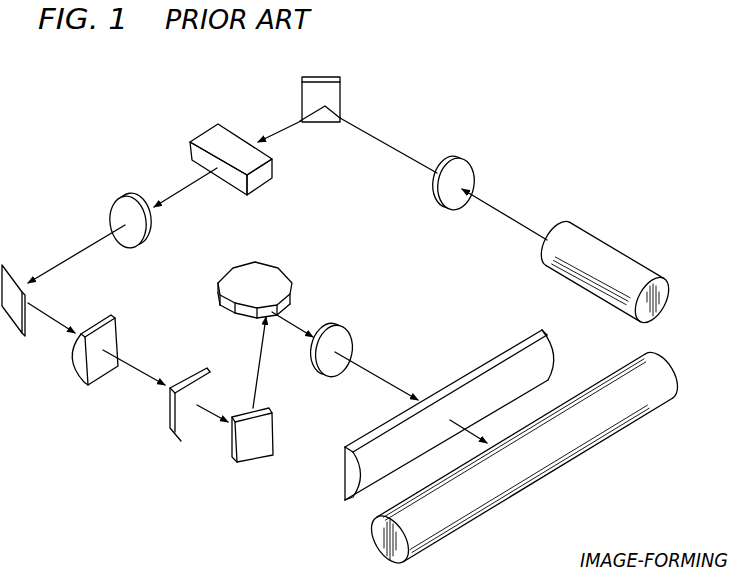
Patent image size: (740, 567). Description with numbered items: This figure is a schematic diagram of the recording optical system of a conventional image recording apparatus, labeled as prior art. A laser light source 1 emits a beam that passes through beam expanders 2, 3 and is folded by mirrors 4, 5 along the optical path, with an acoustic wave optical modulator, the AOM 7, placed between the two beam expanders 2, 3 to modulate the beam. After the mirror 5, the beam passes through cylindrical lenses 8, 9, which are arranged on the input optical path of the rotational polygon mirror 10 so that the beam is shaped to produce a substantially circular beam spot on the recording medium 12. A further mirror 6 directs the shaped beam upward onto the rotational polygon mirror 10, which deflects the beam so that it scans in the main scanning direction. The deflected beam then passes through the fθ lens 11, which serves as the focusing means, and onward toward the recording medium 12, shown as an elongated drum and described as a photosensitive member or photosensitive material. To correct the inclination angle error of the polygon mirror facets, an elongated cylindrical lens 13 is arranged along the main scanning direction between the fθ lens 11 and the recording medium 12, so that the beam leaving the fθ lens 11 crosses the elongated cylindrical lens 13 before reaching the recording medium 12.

The laser light source 1 is at (563, 233).
The beam expander 2 is at (468, 174).
The beam expander 3 is at (115, 208).
The mirror 4 is at (337, 93).
The mirror 5 is at (10, 317).
The mirror 6 is at (250, 453).
The acoustic wave optical modulator (AOM) 7 is at (204, 138).
The cylindrical lens 8 is at (97, 372).
The cylindrical lens 9 is at (184, 432).
The rotational polygon mirror 10 is at (266, 272).
The fθ lens 11 is at (347, 337).
The recording medium 12 is at (372, 538).
The elongated cylindrical lens 13 is at (362, 467).